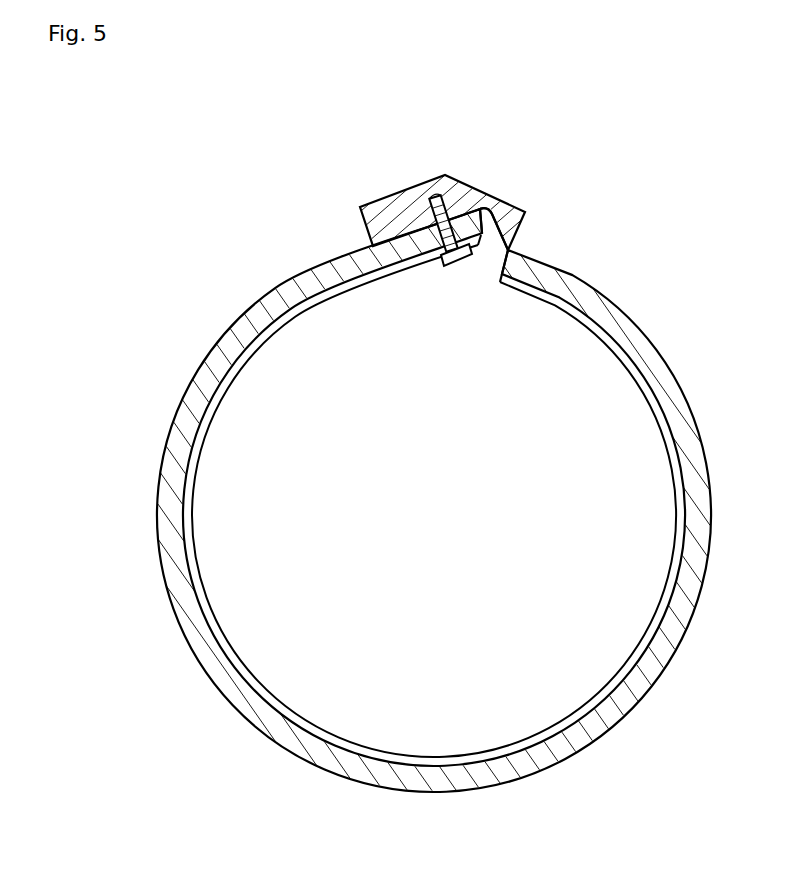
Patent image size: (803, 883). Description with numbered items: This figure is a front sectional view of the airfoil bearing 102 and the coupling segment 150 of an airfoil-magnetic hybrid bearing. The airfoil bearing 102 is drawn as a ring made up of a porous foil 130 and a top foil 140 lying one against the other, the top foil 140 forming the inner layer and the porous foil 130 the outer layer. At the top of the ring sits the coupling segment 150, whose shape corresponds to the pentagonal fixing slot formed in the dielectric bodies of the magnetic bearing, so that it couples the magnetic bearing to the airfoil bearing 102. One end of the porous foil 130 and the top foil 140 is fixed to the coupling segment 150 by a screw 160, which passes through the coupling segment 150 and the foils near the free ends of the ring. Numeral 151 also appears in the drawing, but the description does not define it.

The airfoil bearing 102 is at (200, 198).
The porous foil 130 is at (283, 298).
The top foil 140 is at (236, 358).
The coupling segment 150 is at (387, 200).
The screw 160 is at (423, 210).
The screw 151 is at (447, 199).